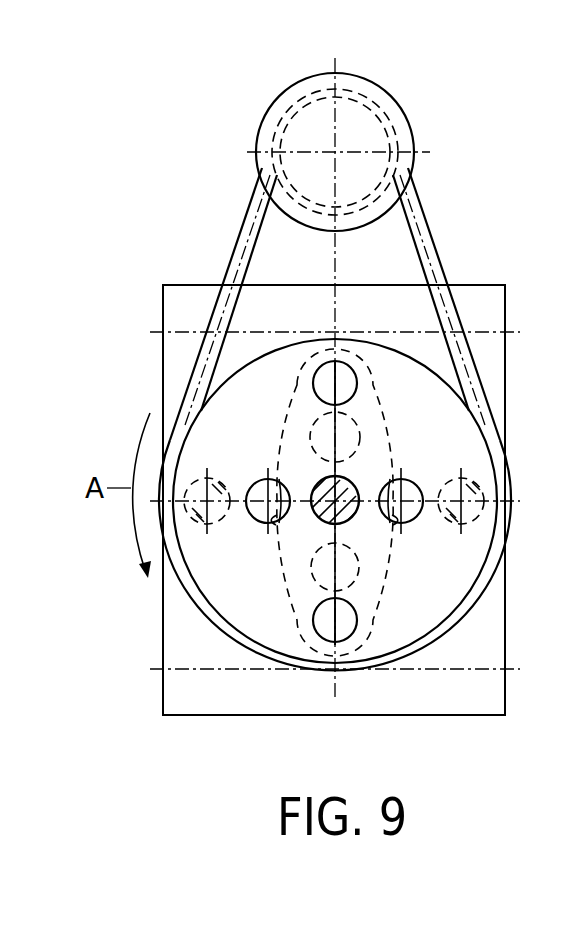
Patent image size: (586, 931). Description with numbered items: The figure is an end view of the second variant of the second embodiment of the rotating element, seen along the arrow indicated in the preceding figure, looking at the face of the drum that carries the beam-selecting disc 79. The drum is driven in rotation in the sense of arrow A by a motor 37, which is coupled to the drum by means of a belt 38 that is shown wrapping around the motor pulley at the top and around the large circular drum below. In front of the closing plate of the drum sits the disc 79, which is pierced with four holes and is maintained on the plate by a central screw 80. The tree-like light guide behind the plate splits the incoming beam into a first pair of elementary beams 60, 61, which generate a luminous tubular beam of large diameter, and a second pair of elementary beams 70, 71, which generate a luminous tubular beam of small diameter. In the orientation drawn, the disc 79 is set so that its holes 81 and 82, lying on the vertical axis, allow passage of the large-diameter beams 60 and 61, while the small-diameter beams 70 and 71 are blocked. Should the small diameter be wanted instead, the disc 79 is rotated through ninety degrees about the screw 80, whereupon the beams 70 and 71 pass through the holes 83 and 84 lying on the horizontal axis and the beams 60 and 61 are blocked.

The motor 37 is at (404, 113).
The belt 38 is at (427, 237).
The disc 79 is at (262, 442).
The screw 80 is at (327, 497).
The hole 81 is at (318, 372).
The hole 82 is at (336, 615).
The hole 83 is at (262, 517).
The hole 84 is at (410, 522).
The elementary beam 60 is at (343, 637).
The elementary beam 61 is at (358, 372).
The elementary beam 70 is at (296, 555).
The elementary beam 71 is at (302, 445).